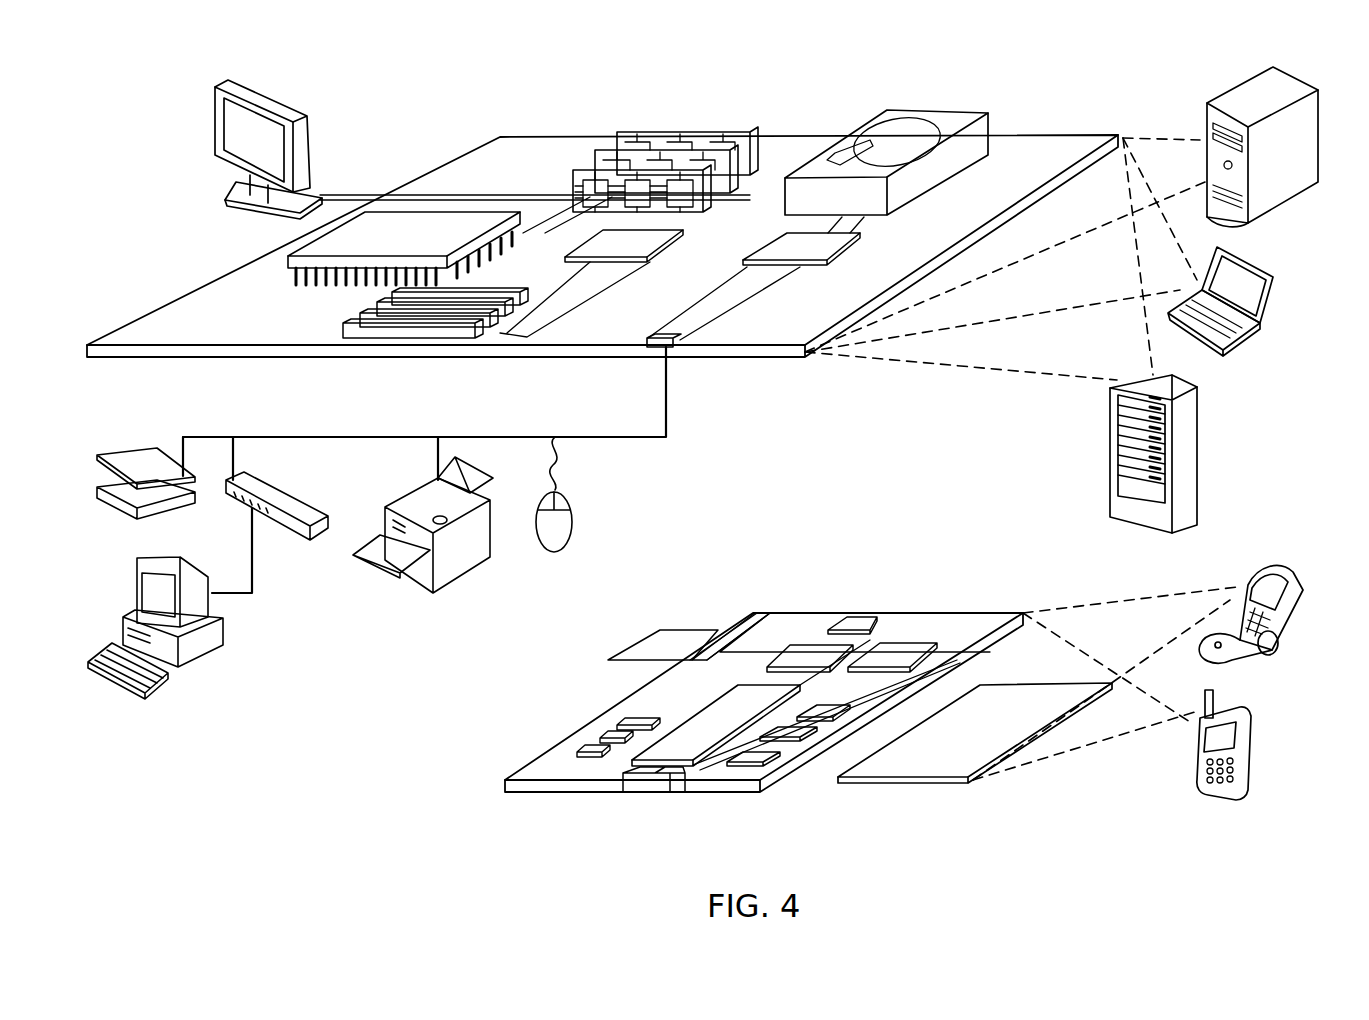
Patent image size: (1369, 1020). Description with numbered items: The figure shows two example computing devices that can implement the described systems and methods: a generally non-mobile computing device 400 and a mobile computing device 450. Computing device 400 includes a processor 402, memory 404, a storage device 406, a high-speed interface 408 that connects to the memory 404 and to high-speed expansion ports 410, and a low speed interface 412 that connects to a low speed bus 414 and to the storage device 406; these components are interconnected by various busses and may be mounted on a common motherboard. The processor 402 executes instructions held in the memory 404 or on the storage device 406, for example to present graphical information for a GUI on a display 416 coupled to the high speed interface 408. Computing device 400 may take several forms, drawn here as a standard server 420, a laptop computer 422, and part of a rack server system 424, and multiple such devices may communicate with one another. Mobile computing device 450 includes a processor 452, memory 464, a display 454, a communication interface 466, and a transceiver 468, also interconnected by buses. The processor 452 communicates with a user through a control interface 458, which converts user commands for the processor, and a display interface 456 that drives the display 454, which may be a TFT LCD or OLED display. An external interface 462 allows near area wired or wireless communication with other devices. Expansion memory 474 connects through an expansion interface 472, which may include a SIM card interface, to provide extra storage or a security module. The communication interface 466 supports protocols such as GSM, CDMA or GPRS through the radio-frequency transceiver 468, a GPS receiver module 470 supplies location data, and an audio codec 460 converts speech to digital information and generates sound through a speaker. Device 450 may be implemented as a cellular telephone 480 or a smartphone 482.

The computing device 400 is at (418, 104).
The processor 402 is at (290, 260).
The memory 404 is at (628, 136).
The storage device 406 is at (880, 113).
The high-speed interface 408 is at (593, 240).
The high-speed expansion ports 410 is at (357, 318).
The low speed interface 412 is at (783, 247).
The low speed bus 414 is at (677, 350).
The display 416 is at (228, 83).
The standard server 420 is at (1207, 121).
The laptop computer 422 is at (1273, 276).
The rack server system 424 is at (1110, 478).
The computing device 450 is at (478, 793).
The processor 452 is at (687, 750).
The display 454 is at (933, 765).
The display interface 456 is at (760, 767).
The control interface 458 is at (803, 747).
The audio codec 460 is at (817, 710).
The external interface 462 is at (653, 783).
The memory 464 is at (617, 735).
The communication interface 466 is at (812, 653).
The transceiver 468 is at (893, 652).
The GPS receiver module 470 is at (867, 620).
The expansion interface 472 is at (740, 650).
The expansion memory 474 is at (660, 630).
The cellular telephone 480 is at (1258, 568).
The smartphone 482 is at (1197, 753).